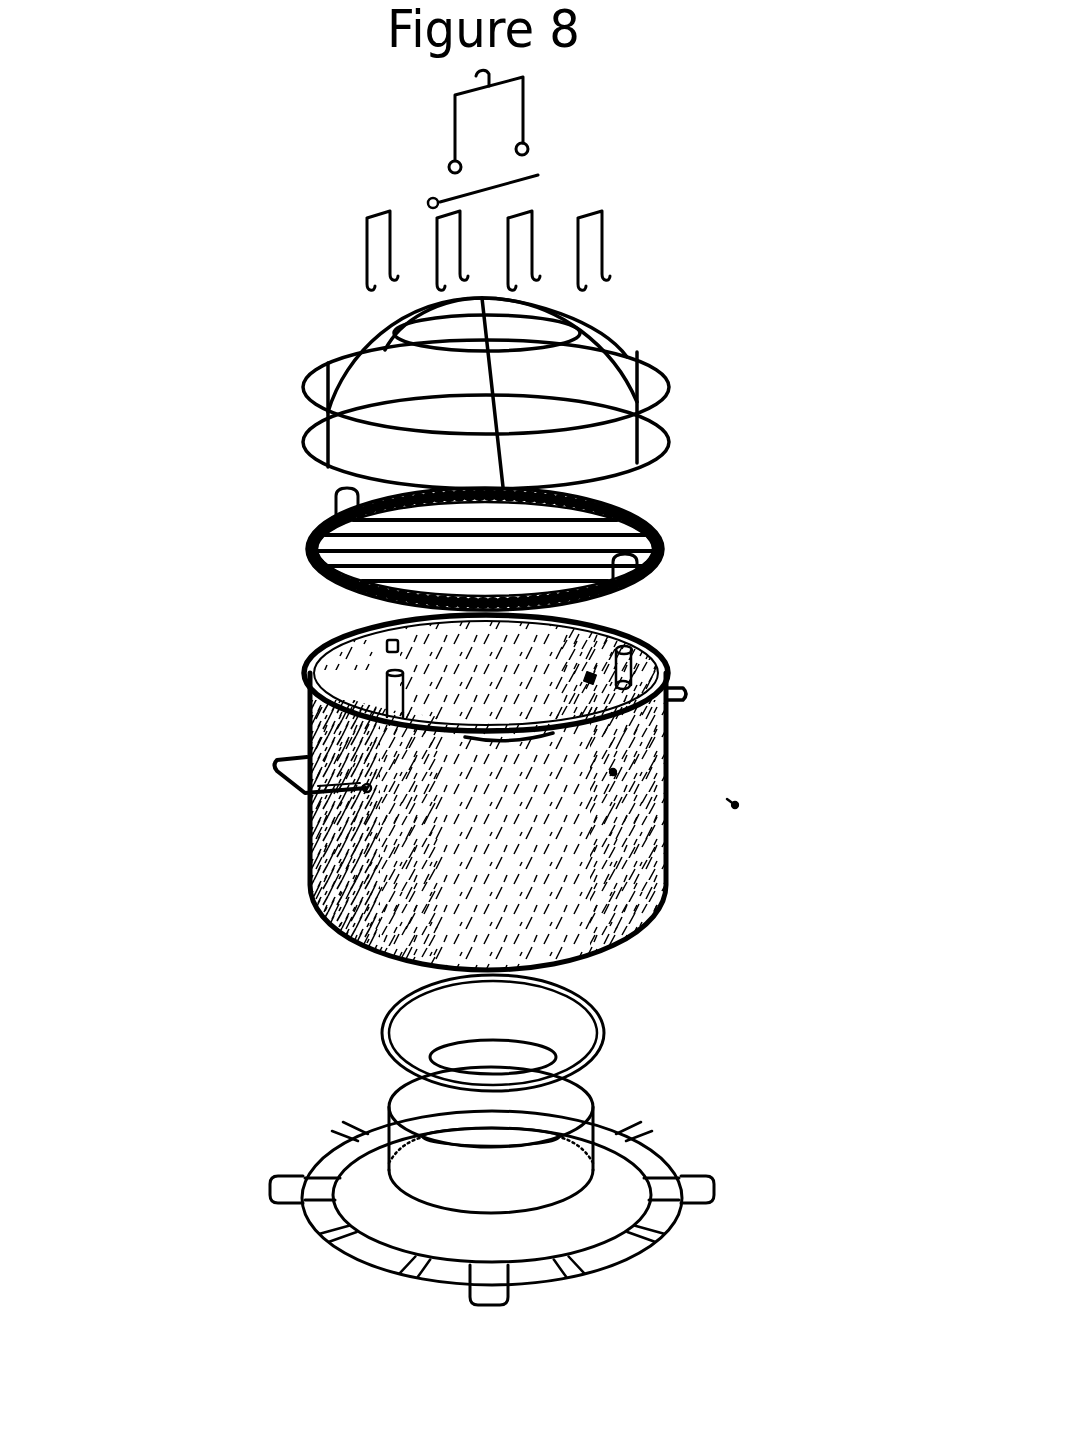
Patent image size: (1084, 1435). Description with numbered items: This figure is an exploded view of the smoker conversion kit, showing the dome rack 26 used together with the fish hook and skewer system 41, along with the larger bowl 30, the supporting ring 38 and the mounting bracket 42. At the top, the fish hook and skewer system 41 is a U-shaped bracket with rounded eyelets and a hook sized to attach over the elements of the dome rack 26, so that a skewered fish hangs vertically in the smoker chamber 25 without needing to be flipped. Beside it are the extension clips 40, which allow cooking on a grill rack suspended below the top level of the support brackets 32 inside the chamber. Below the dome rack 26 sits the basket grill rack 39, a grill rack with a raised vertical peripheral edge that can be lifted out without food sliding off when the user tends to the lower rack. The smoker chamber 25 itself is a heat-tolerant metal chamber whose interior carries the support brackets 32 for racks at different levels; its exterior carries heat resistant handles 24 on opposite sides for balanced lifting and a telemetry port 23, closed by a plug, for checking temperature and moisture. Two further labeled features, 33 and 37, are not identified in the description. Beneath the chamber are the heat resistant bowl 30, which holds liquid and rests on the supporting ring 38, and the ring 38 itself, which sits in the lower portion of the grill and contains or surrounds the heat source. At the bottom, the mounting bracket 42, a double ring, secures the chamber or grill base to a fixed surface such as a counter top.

The fish hook and skewer system 41 is at (453, 124).
The extension clips 40 is at (390, 247).
The dome rack 26 is at (610, 350).
The basket grill rack 39 is at (320, 525).
The support brackets 32 is at (655, 672).
The post 33 is at (387, 675).
The heat resistant handles 24 is at (275, 765).
The telemetry port 23 is at (735, 803).
The smoker chamber 25 is at (310, 860).
The side wall 37 is at (613, 772).
The heat resistant pan or bowl 30 is at (385, 1022).
The supporting ring 38 is at (388, 1143).
The mounting bracket 42 is at (597, 1267).